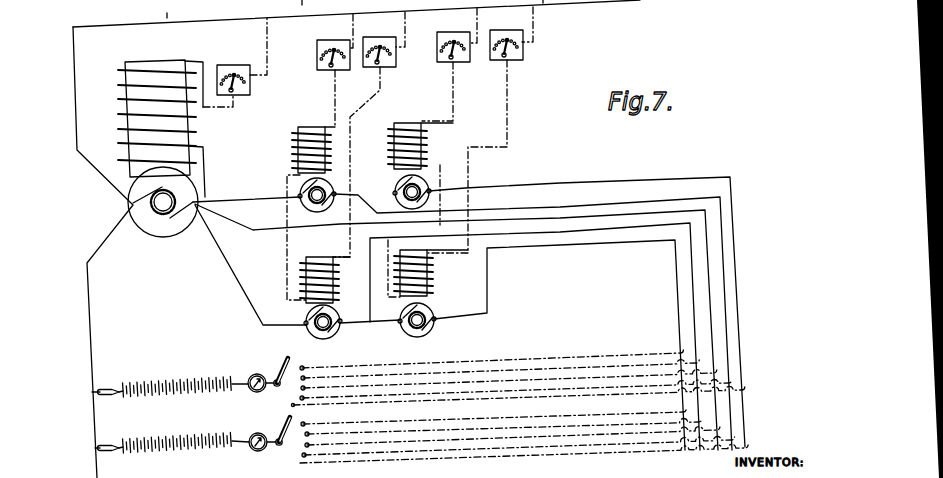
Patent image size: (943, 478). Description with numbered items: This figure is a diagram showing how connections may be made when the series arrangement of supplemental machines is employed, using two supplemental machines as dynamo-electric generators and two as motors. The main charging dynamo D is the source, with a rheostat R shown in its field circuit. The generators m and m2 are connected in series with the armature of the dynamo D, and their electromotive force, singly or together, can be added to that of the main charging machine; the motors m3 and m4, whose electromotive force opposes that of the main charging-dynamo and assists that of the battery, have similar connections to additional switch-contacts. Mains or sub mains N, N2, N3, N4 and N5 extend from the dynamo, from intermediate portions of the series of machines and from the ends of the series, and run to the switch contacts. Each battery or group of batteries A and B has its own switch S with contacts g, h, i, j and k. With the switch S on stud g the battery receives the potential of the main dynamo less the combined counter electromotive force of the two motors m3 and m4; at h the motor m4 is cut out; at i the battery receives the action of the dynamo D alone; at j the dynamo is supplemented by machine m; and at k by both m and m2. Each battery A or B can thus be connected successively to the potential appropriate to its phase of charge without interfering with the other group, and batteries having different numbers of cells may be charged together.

The dynamo D is at (125, 111).
The rheostat R is at (242, 56).
The supplemental machine m is at (320, 169).
The supplemental machine m2 is at (413, 166).
The motor m3 is at (330, 298).
The motor m4 is at (431, 293).
The main N is at (713, 310).
The sub main N2 is at (724, 258).
The sub main N3 is at (738, 267).
The line conductor N4 is at (680, 315).
The line conductor N5 is at (692, 277).
The battery A is at (183, 377).
The battery B is at (185, 434).
The switch S is at (277, 400).
The switch-stud g is at (300, 359).
The switch contact h is at (296, 377).
The switch contact i is at (300, 388).
The switch contact j is at (300, 398).
The switch contact k is at (292, 405).